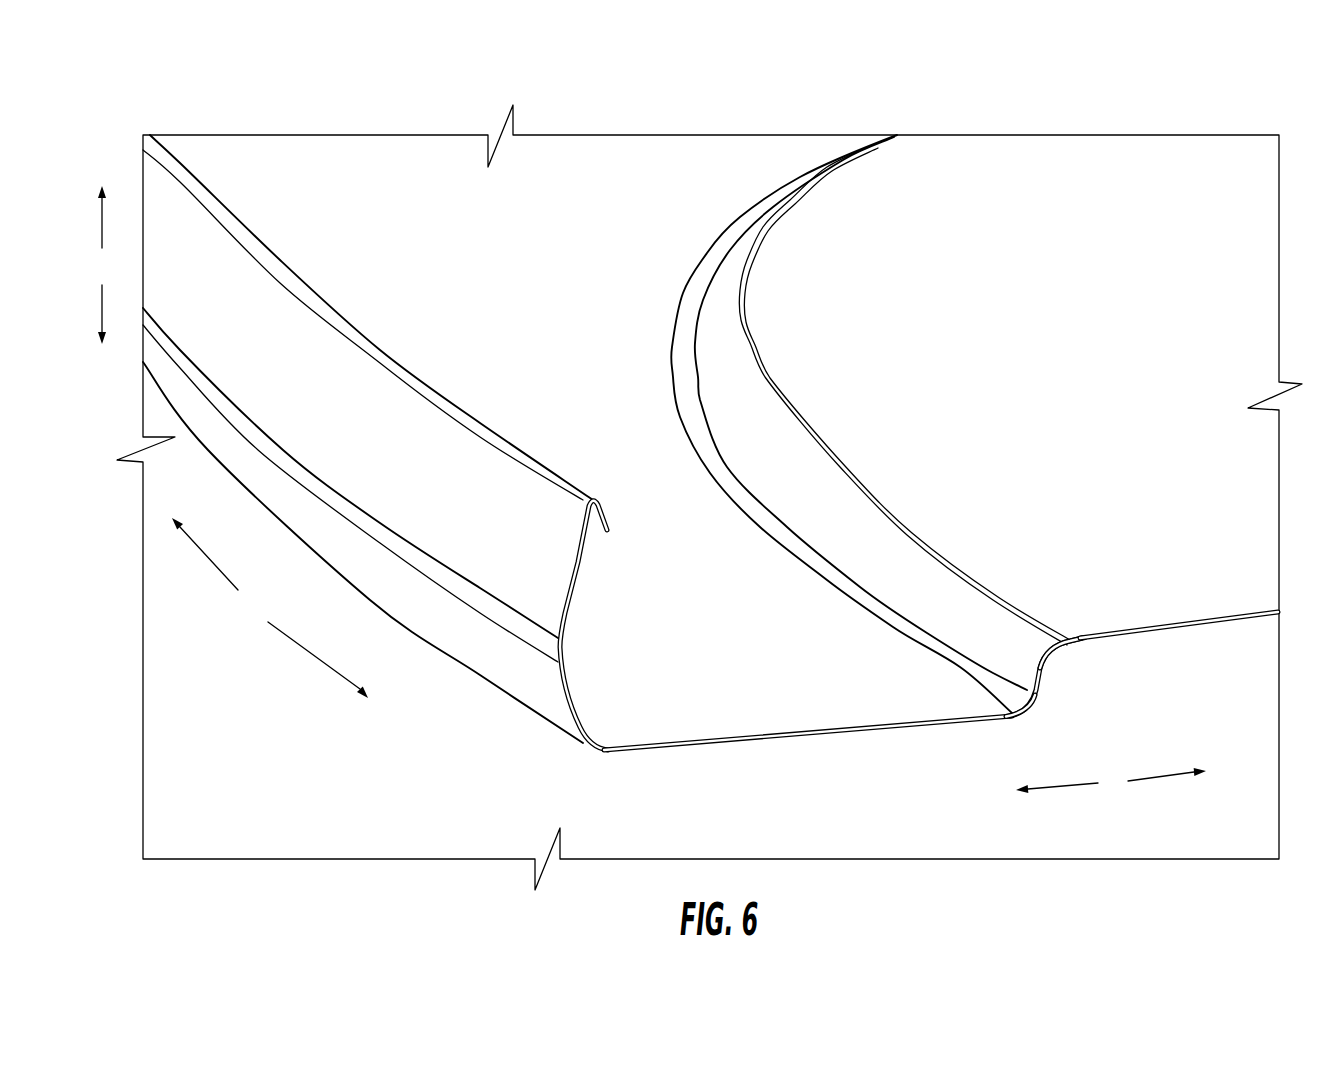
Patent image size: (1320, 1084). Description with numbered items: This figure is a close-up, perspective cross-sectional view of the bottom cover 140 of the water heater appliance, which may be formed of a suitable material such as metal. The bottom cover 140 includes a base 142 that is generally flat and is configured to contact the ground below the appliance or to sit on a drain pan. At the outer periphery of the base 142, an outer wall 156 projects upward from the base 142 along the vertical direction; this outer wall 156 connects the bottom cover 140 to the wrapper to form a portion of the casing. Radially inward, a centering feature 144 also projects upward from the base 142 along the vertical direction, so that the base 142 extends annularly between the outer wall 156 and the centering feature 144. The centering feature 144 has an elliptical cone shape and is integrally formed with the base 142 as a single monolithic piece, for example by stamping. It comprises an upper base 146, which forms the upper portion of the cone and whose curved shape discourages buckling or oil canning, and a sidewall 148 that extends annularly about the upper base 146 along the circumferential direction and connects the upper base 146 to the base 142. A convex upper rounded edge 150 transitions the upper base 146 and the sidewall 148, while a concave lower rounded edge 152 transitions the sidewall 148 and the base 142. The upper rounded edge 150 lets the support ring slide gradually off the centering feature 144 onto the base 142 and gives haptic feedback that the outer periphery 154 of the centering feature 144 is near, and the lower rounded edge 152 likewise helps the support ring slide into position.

The bottom cover 140 is at (699, 475).
The base 142 is at (665, 723).
The centering feature 144 is at (871, 387).
The upper base 146 is at (1107, 180).
The sidewall 148 is at (1100, 699).
The upper rounded edge 150 is at (1073, 651).
The lower rounded edge 152 is at (1015, 719).
The outer periphery 154 is at (836, 468).
The outer wall 156 is at (537, 600).